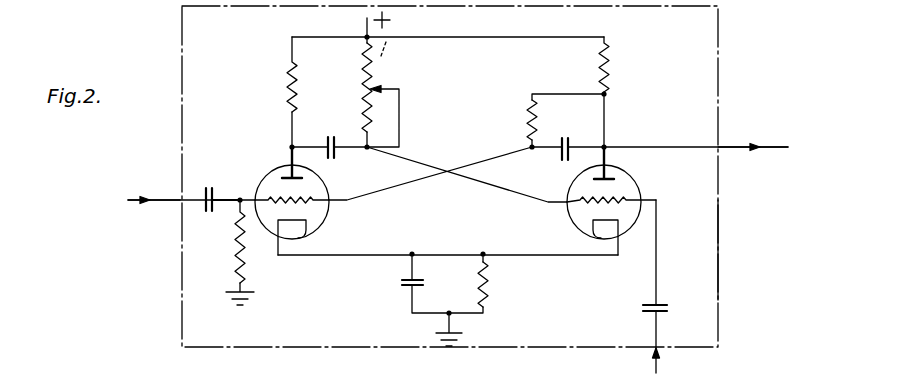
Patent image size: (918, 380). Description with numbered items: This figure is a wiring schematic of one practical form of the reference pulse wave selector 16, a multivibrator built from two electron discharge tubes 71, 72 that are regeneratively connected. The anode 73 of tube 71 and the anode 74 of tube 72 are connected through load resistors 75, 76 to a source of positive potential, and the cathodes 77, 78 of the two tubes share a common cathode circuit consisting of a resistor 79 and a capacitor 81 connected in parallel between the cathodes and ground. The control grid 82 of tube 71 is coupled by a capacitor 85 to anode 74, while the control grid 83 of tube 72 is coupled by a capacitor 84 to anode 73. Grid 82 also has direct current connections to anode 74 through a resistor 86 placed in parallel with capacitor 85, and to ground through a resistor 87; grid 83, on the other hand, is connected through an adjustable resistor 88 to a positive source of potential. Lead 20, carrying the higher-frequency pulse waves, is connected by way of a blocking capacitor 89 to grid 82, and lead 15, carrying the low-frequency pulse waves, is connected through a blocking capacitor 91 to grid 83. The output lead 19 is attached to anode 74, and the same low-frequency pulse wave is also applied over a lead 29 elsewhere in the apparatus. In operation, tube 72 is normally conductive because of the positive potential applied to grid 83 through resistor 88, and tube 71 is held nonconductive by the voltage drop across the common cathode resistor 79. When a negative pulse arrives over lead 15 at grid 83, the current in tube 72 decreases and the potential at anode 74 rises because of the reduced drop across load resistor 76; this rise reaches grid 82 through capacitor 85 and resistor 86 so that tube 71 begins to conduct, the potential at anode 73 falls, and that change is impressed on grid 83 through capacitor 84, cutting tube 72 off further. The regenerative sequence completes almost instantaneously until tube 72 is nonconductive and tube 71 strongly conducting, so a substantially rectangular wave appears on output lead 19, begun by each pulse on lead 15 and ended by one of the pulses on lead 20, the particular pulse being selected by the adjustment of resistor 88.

The lead 15 is at (659, 368).
The reference pulse wave selector 16 is at (724, 275).
The output lead 19 is at (733, 148).
The lead 20 is at (168, 197).
The lead 29 is at (447, 377).
The electron discharge tube 71 is at (270, 233).
The electron discharge tube 72 is at (642, 192).
The anode 73 is at (286, 170).
The anode 74 is at (612, 177).
The load resistor 75 is at (288, 76).
The load resistor 76 is at (610, 70).
The cathode 77 is at (305, 237).
The cathode 78 is at (598, 236).
The resistor 79 is at (490, 288).
The capacitor 81 is at (402, 285).
The control grid 82 is at (313, 197).
The control grid 83 is at (579, 204).
The capacitor 84 is at (328, 136).
The capacitor 85 is at (556, 138).
The resistor 86 is at (526, 118).
The resistor 87 is at (236, 245).
The adjustable resistor 88 is at (374, 82).
The blocking capacitor 89 is at (226, 166).
The blocking capacitor 91 is at (641, 309).